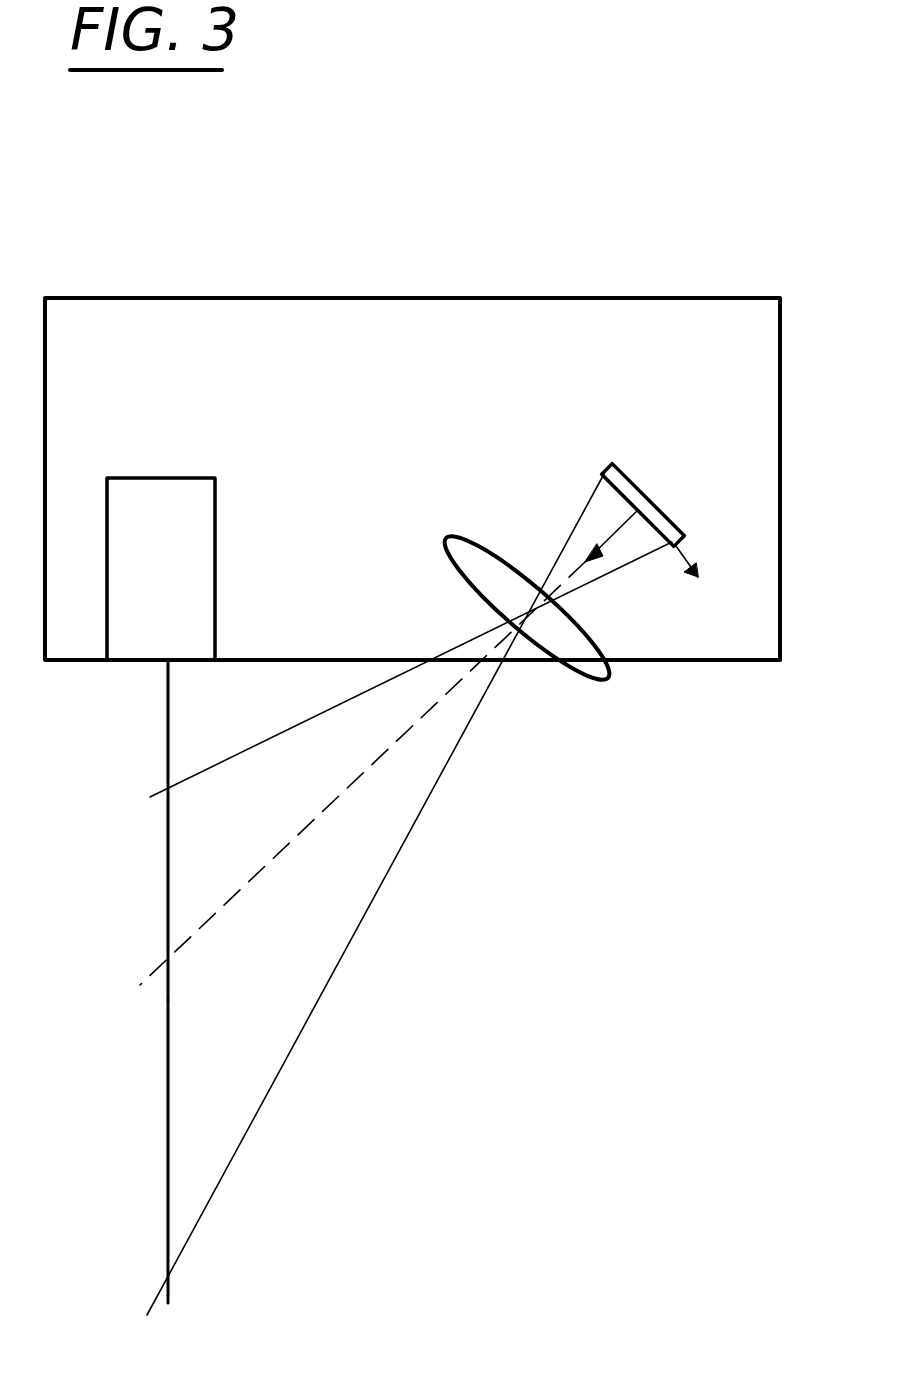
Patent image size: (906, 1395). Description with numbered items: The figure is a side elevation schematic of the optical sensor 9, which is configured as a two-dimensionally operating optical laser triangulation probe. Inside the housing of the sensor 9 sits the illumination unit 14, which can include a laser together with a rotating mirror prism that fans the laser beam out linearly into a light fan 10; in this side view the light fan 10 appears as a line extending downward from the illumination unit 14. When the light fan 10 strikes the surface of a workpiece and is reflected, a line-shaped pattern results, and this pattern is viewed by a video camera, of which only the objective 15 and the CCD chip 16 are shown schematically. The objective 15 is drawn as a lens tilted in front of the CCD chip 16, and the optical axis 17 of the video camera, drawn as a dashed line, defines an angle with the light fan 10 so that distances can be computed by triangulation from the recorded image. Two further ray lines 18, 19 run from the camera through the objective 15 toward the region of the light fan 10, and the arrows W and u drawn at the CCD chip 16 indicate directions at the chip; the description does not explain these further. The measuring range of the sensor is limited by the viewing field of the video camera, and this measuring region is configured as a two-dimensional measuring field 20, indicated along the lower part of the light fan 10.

The optical sensor 9 is at (488, 298).
The illumination unit 14 is at (165, 478).
The light fan 10 is at (167, 737).
The two-dimensional measuring field 20 is at (165, 1097).
The objective 15 is at (596, 682).
The CCD chip 16 is at (632, 478).
The optical axis 17 is at (255, 872).
The ray line 18 is at (257, 750).
The ray line 19 is at (400, 857).
The direction arrow w W is at (601, 533).
The direction arrow u is at (687, 553).